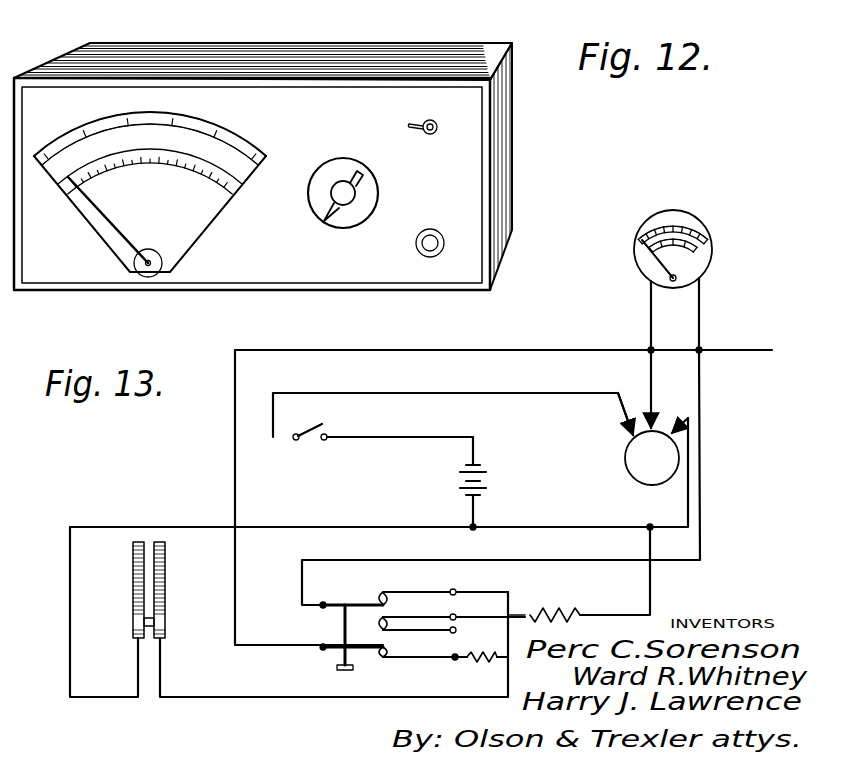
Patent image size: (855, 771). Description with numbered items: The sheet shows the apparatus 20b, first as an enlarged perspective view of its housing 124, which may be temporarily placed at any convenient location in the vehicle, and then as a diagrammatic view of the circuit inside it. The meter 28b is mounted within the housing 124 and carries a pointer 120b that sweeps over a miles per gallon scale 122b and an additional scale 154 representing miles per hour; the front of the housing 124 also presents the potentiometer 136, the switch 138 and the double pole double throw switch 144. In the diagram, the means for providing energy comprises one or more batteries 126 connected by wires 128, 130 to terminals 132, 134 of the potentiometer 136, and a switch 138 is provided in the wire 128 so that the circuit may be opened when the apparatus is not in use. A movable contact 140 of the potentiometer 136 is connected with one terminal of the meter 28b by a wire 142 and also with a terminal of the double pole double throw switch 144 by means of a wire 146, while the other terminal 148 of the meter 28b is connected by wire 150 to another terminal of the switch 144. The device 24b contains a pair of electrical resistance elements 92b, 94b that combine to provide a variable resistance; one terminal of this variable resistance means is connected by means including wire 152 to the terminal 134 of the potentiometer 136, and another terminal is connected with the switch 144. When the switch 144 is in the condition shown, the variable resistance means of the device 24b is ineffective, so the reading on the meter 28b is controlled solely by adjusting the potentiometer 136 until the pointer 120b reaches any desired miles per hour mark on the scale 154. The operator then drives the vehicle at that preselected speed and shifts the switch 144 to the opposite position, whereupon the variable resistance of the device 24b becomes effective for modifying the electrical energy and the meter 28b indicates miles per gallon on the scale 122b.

In FIG. 12, the housing 124 is at (502, 165).
In FIG. 12, the scale 154 is at (132, 160).
In FIG. 13, the scale 154 is at (645, 250).
In FIG. 12, the miles per gallon scale 122b is at (160, 110).
In FIG. 13, the miles per gallon scale 122b is at (690, 231).
In FIG. 12, the meter 28b is at (206, 114).
In FIG. 13, the meter 28b is at (690, 209).
In FIG. 12, the pointer 120b is at (97, 226).
In FIG. 12, the switch 138 is at (424, 119).
In FIG. 13, the switch 138 is at (298, 441).
In FIG. 12, the potentiometer 136 is at (378, 193).
In FIG. 13, the potentiometer 136 is at (657, 486).
In FIG. 12, the double pole double throw switch 144 is at (428, 257).
In FIG. 13, the double pole double throw switch 144 is at (333, 630).
In FIG. 13, the apparatus 20b is at (538, 345).
In FIG. 13, the wire 146 is at (298, 350).
In FIG. 13, the wire 128 is at (515, 393).
In FIG. 13, the batteries 126 is at (490, 483).
In FIG. 13, the wire 152 is at (300, 527).
In FIG. 13, the wire 130 is at (578, 524).
In FIG. 13, the device 24b is at (183, 522).
In FIG. 13, the electrical resistance element 92b is at (137, 590).
In FIG. 13, the electrical resistance element 94b is at (165, 590).
In FIG. 13, the wire 150 is at (705, 522).
In FIG. 13, the terminal 132 is at (628, 438).
In FIG. 13, the terminal 134 is at (690, 418).
In FIG. 13, the movable contact 140 is at (657, 418).
In FIG. 13, the wire 142 is at (650, 305).
In FIG. 13, the terminal 148 is at (702, 282).